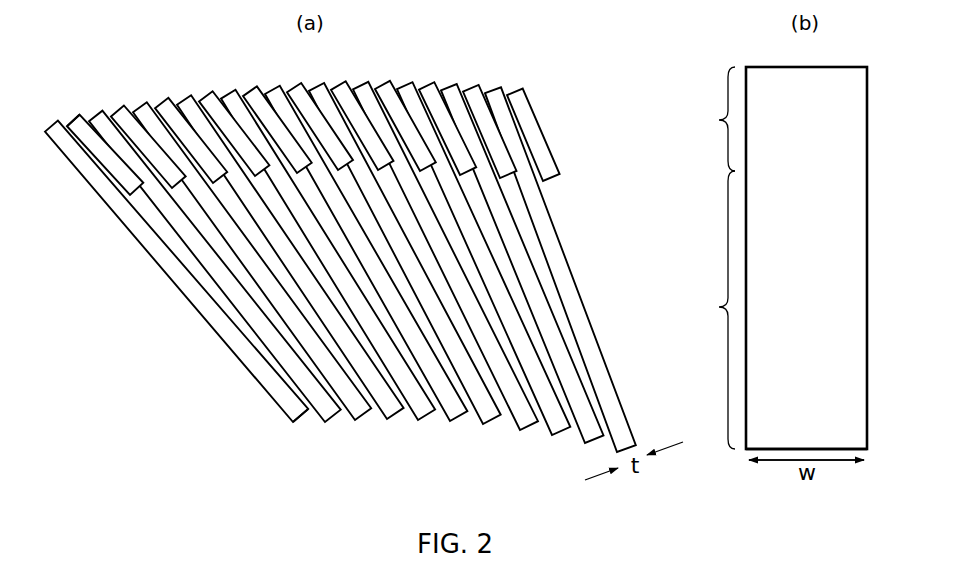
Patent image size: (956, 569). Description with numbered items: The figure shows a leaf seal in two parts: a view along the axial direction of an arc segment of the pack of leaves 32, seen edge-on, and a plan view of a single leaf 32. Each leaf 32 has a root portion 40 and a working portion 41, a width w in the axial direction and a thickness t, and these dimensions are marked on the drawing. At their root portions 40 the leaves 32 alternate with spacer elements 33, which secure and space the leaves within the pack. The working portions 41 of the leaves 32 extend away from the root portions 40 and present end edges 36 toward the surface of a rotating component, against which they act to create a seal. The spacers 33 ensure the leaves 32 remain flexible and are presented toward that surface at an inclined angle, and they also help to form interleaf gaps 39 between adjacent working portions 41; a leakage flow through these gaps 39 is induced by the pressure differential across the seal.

The leaf 32 is at (147, 253).
The spacer element 33 is at (78, 118).
The end edge 36 is at (300, 422).
The interleaf gap 39 is at (515, 203).
The root portion 40 is at (100, 182).
The working portion 41 is at (207, 307).